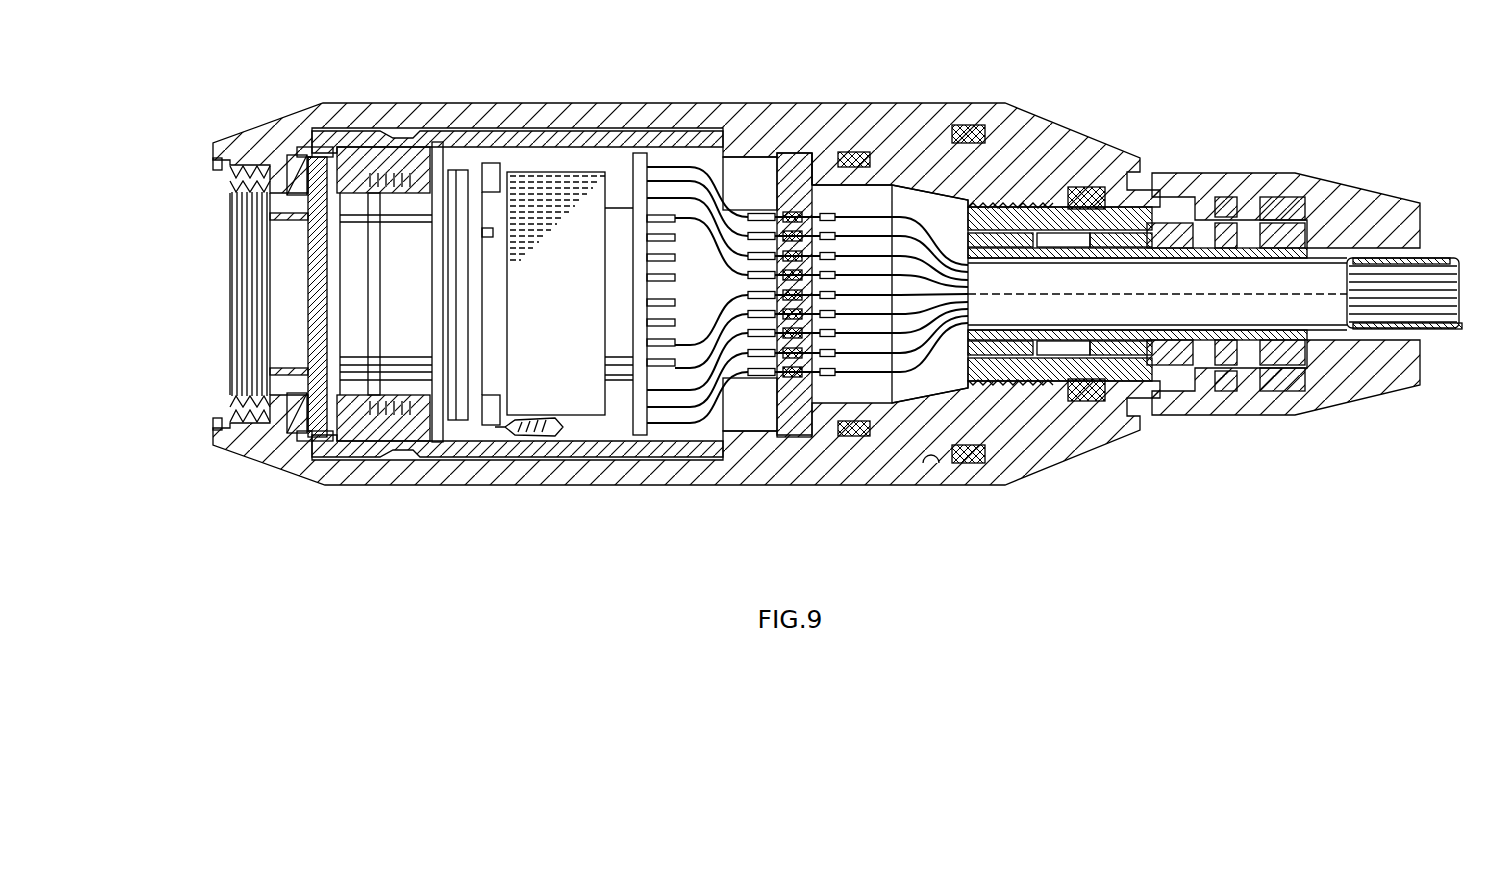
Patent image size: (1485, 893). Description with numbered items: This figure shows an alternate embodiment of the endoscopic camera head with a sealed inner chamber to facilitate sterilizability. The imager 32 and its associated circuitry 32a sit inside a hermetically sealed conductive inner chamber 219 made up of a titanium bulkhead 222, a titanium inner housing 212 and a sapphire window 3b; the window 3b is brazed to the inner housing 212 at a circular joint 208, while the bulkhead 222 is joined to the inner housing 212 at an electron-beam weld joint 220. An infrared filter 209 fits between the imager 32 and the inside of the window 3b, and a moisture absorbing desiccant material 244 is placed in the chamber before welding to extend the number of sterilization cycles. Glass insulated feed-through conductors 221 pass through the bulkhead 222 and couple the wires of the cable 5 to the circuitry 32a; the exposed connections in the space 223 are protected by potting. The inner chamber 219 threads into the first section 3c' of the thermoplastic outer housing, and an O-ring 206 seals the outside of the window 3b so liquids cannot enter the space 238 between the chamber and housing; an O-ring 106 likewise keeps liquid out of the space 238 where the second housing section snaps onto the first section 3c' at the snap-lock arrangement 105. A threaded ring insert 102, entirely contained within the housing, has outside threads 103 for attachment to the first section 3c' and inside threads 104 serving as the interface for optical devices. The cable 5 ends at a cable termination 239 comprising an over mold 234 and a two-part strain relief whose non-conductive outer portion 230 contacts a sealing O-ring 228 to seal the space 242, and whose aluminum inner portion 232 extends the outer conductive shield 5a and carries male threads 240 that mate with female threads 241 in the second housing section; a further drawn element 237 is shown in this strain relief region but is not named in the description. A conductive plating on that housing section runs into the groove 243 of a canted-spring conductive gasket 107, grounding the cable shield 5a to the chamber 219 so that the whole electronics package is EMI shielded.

The threaded ring insert 102 is at (207, 162).
The outside threads 103 is at (245, 165).
The window 3b is at (322, 143).
The infrared filter 209 is at (355, 150).
The inner housing 212 is at (438, 140).
The associated circuitry 32a is at (483, 148).
The space 238 is at (570, 133).
The weld joint 220 is at (730, 140).
The inner chamber 219 is at (742, 150).
The conductive gasket 107 is at (840, 148).
The groove 243 is at (862, 150).
The sealing O-ring 228 is at (1083, 186).
The outer portion of strain relief 230 is at (1148, 180).
The inner portion of strain relief 232 is at (1197, 218).
The over mold 234 is at (1340, 190).
The cable 5 is at (1383, 280).
The inside threads 104 is at (225, 392).
The imager 32 is at (386, 285).
The O-ring 206 is at (279, 440).
The circular joint 208 is at (320, 443).
The desiccant material 244 is at (512, 437).
The first section of outer housing 3c' is at (686, 474).
The feed-through conductors 221 is at (757, 383).
The bulkhead 222 is at (792, 440).
The space 223 is at (921, 386).
The snap-lock arrangement 105 is at (933, 470).
The O-ring 106 is at (986, 466).
The space 242 is at (1082, 402).
The clamping nut 237 is at (1118, 420).
The female threads 241 is at (1178, 362).
The male threads 240 is at (1185, 360).
The cable termination 239 is at (1292, 433).
The outer conductive shield 5a is at (1382, 335).